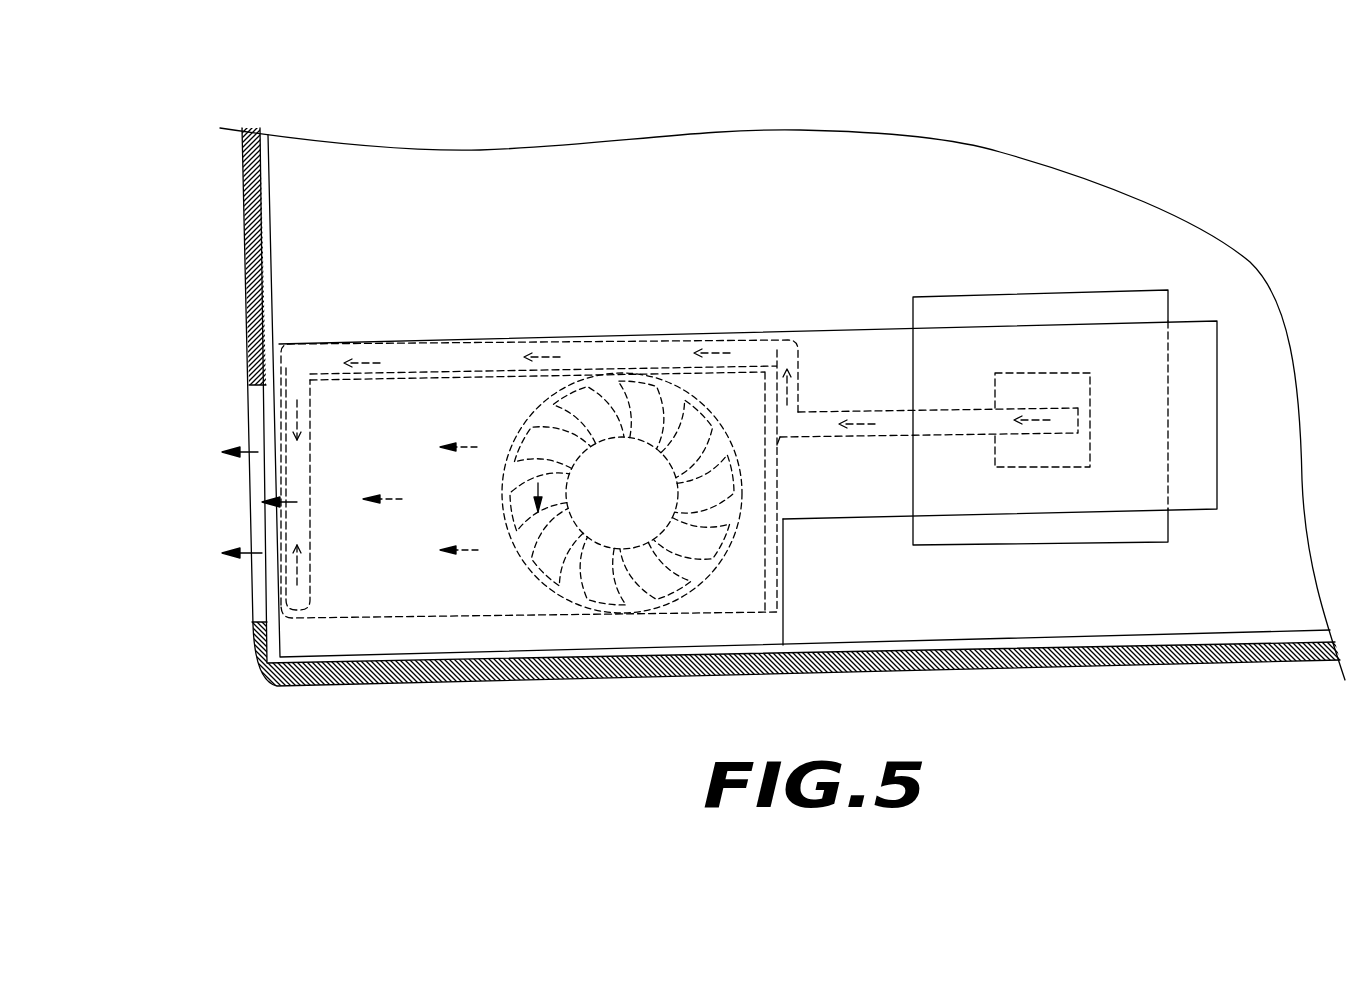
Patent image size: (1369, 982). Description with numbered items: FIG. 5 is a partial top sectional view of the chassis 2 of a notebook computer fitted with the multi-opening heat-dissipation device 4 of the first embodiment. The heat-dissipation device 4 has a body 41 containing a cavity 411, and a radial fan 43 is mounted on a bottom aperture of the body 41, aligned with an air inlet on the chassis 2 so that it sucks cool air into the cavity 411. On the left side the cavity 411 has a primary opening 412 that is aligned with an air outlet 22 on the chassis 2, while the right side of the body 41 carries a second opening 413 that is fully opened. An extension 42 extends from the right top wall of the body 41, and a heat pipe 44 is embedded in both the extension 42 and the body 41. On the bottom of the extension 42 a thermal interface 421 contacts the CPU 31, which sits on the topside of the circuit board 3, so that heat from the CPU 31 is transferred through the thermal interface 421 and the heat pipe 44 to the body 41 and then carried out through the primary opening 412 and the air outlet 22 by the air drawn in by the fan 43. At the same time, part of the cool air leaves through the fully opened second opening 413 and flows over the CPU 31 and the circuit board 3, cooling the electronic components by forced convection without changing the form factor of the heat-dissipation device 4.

The chassis 2 is at (243, 282).
The circuit board 3 is at (273, 183).
The air outlet 22 is at (255, 430).
The heat-dissipation device 4 is at (658, 297).
The body 41 is at (508, 340).
The cavity 411 is at (428, 590).
The primary opening 412 is at (280, 571).
The second opening 413 is at (778, 549).
The extension 42 is at (833, 348).
The thermal interface 421 is at (1035, 383).
The fan 43 is at (612, 593).
The heat pipe 44 is at (885, 417).
The CPU 31 is at (965, 305).